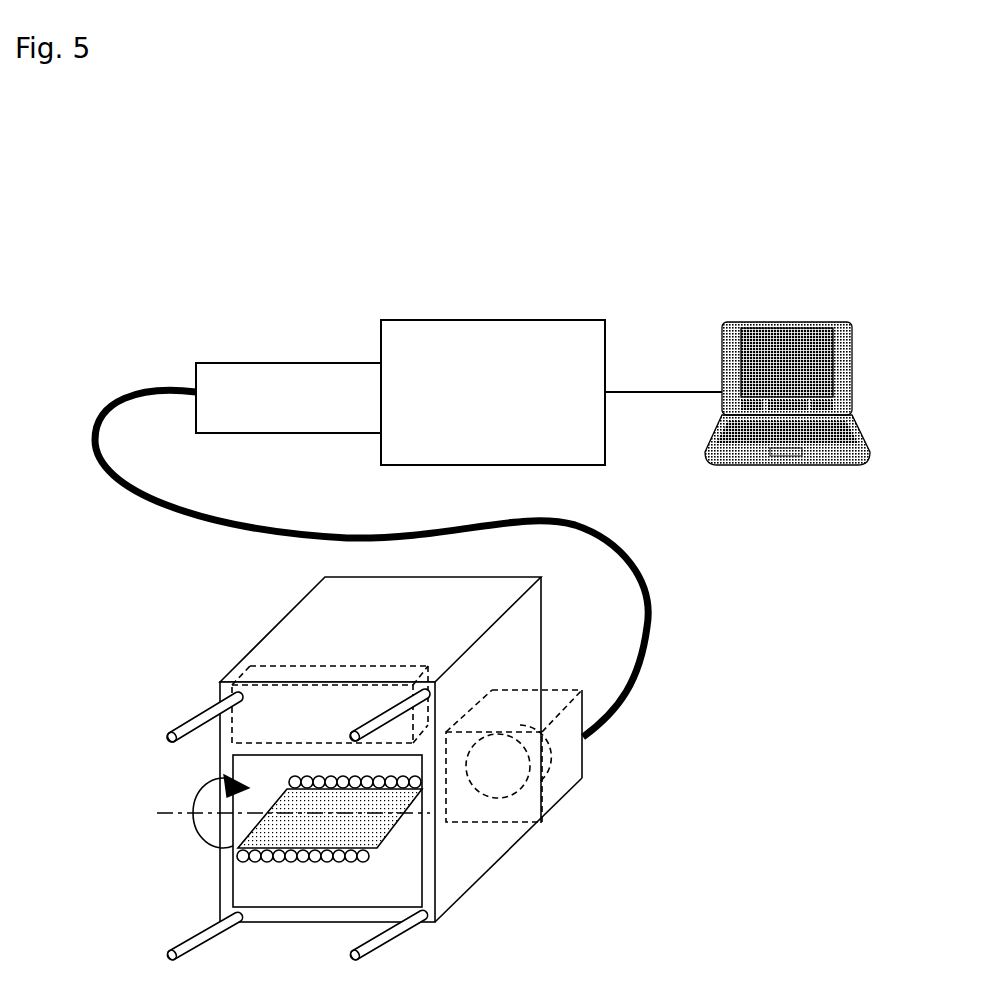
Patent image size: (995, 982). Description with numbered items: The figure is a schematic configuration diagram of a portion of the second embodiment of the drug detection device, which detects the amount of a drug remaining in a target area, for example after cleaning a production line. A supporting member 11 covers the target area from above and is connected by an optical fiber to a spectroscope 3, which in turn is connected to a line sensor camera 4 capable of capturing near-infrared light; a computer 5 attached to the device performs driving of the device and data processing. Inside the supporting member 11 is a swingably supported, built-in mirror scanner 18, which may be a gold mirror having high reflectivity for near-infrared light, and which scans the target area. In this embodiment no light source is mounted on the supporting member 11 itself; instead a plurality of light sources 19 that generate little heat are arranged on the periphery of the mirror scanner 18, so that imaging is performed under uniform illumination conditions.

The spectroscope 3 is at (270, 385).
The line sensor camera 4 is at (475, 337).
The computer 5 is at (790, 327).
The supporting member 11 is at (467, 853).
The mirror scanner 18 is at (383, 837).
The light sources 19 is at (342, 776).